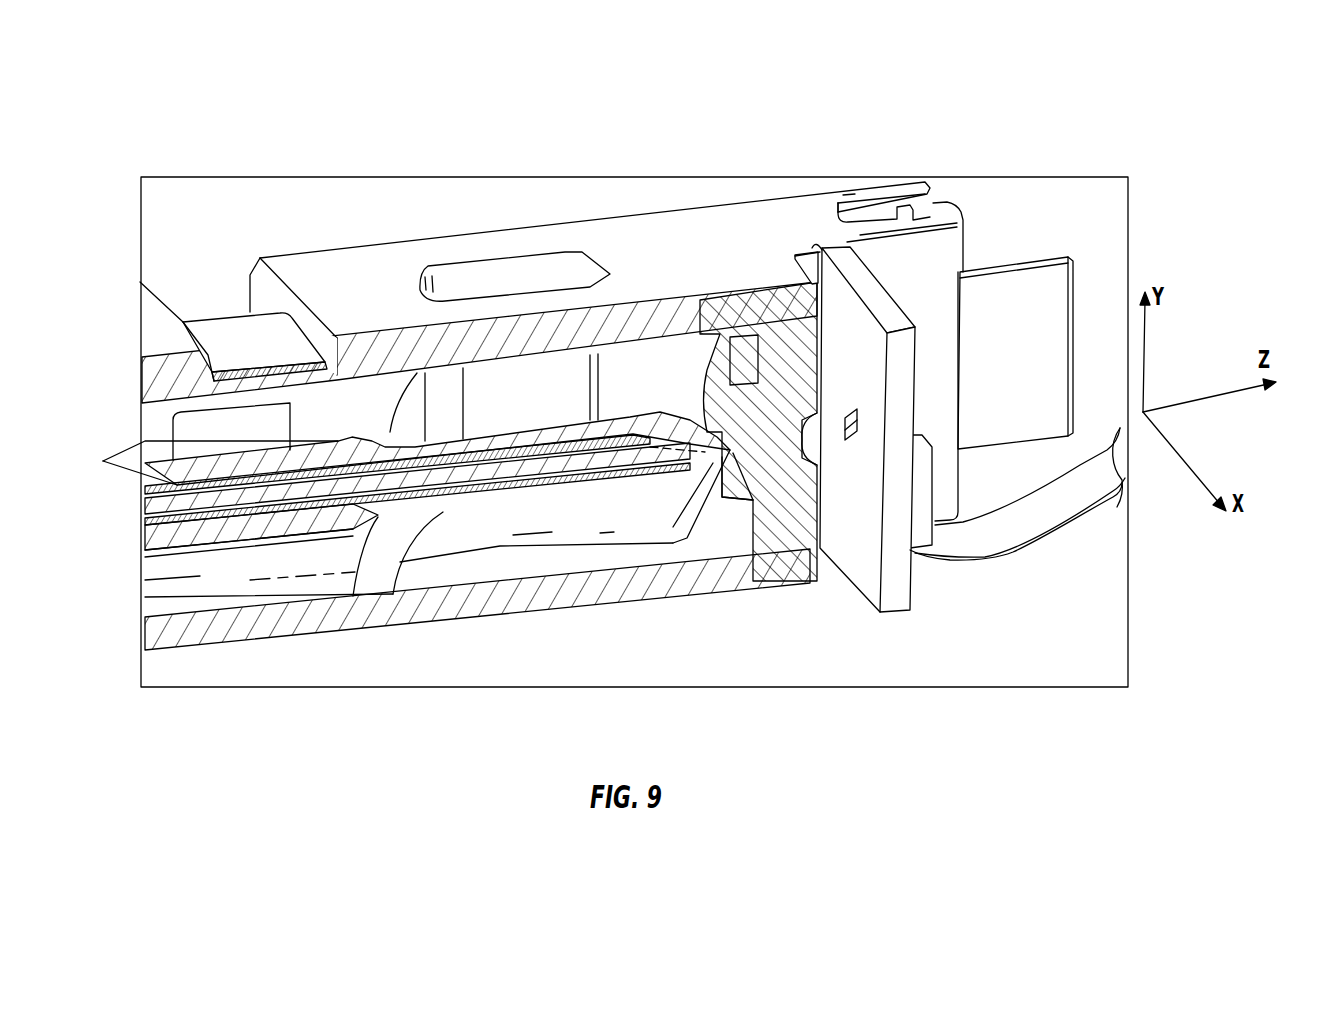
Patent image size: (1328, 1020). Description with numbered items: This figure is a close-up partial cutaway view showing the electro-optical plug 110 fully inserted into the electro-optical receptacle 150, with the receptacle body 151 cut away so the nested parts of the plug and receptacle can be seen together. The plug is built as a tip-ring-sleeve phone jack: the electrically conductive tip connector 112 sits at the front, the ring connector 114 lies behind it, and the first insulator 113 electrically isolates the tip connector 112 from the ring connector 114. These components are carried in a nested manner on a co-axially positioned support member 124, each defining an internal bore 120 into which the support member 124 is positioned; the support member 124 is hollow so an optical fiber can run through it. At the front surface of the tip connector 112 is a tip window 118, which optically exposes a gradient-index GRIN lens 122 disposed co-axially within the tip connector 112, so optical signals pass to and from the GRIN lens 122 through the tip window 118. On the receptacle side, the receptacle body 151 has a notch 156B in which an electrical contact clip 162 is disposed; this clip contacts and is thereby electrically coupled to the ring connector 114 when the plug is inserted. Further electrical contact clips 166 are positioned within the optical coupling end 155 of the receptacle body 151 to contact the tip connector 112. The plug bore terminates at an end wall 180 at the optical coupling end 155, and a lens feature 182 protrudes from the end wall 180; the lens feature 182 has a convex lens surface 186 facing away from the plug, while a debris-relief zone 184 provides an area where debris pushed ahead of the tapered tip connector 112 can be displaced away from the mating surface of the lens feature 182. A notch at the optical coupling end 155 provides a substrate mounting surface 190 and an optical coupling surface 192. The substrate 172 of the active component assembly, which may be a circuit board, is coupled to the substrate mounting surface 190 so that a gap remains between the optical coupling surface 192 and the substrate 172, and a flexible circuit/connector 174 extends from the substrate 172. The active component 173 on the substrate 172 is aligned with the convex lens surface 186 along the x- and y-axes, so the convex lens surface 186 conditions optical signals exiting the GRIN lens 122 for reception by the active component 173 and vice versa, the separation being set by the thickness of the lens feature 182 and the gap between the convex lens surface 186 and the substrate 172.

The connector assembly 110 is at (209, 341).
The tip connector 112 is at (583, 535).
The first insulator 113 is at (352, 608).
The ring connector 114 is at (244, 596).
The tip window 118 is at (647, 431).
The internal bore 120 is at (570, 470).
The GRIN lens 122 is at (632, 436).
The support member 124 is at (217, 527).
The electro-optical receptacle 150 is at (398, 192).
The receptacle body 151 is at (340, 280).
The optical coupling end 155 is at (846, 160).
The notch 156B is at (226, 266).
The electrical contact clip 162 is at (223, 313).
The electrical contact clips 166 is at (558, 328).
The substrate 172 is at (890, 304).
The active component 173 is at (852, 410).
The flexible circuit/connector 174 is at (1027, 550).
The end wall 180 is at (743, 353).
The lens feature 182 is at (742, 452).
The debris-relief zone 184 is at (688, 366).
The convex lens surface 186 is at (812, 444).
The substrate mounting surface 190 is at (818, 255).
The optical coupling surface 192 is at (815, 250).